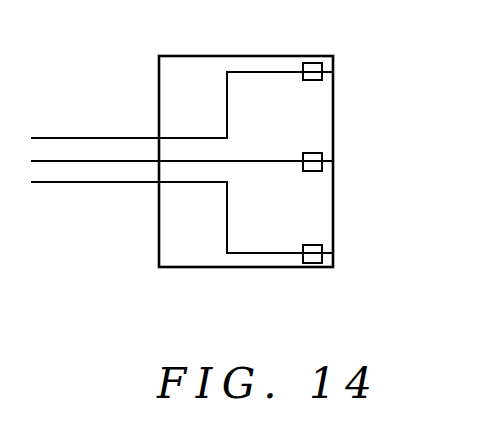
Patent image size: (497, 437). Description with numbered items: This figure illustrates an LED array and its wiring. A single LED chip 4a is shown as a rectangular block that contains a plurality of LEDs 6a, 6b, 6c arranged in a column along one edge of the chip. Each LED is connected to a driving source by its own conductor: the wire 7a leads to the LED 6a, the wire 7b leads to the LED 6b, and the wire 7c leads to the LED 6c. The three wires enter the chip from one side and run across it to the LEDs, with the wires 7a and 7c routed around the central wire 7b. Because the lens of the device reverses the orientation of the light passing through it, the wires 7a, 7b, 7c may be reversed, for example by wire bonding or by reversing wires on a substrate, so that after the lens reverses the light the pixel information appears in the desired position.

The LED chip 4a is at (247, 267).
The LED 6a is at (333, 72).
The LED 6b is at (333, 161).
The LED 6c is at (333, 253).
The wire 7a is at (226, 87).
The wire 7b is at (261, 160).
The wire 7c is at (260, 252).